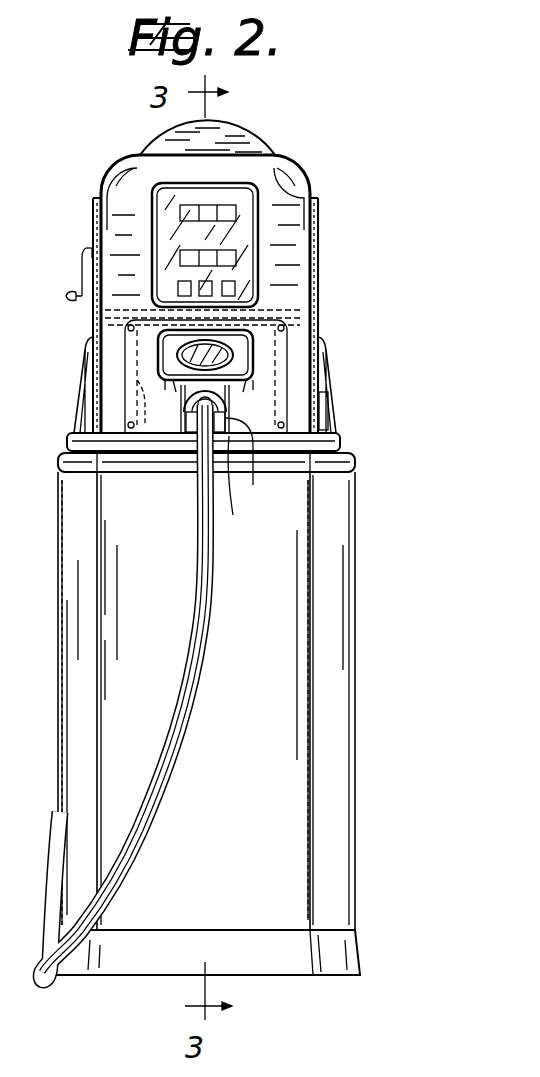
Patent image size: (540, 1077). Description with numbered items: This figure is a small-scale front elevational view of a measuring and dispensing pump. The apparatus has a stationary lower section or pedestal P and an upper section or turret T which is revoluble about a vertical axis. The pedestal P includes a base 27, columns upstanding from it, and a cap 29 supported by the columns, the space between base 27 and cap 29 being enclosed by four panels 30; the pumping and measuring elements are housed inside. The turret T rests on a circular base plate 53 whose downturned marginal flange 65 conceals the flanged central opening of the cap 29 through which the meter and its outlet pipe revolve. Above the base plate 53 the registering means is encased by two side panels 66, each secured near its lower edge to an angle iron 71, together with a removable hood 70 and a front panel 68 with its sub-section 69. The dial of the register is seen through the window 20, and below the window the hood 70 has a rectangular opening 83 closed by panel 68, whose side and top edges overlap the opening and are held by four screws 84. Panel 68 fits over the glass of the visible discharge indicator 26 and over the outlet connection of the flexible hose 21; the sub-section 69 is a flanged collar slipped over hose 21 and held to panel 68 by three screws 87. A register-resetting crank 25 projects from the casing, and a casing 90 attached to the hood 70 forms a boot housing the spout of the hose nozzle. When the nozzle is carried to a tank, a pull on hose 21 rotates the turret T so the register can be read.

The window 20 is at (238, 240).
The flexible hose 21 is at (197, 484).
The register-resetting crank 25 is at (66, 296).
The visible discharge indicator 26 is at (230, 350).
The base 27 is at (350, 950).
The cap 29 is at (355, 465).
The panels 30 is at (80, 776).
The circular base plate 53 is at (116, 432).
The downturned marginal flange 65 is at (243, 487).
The side panels 66 is at (93, 227).
The front panel 68 is at (268, 371).
The sub-section 69 is at (230, 400).
The hood 70 is at (299, 162).
The angle iron 71 is at (88, 357).
The rectangular opening 83 is at (206, 376).
The screws 84 is at (128, 328).
The screws 87 is at (252, 462).
The casing 90 is at (228, 137).
The pedestal P is at (358, 707).
The turret T is at (62, 437).